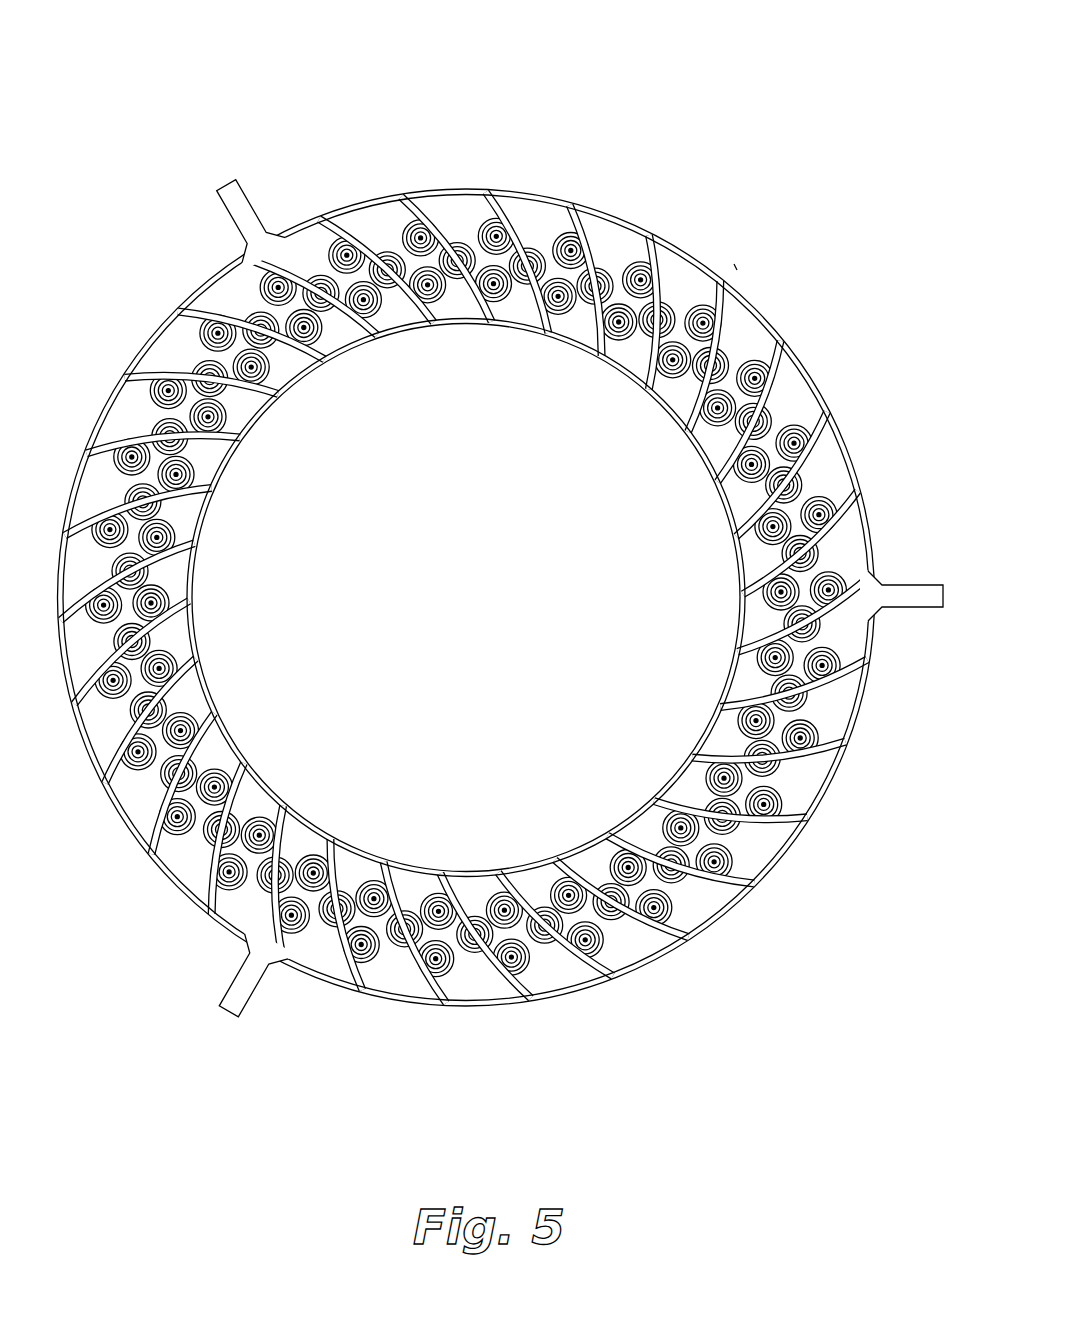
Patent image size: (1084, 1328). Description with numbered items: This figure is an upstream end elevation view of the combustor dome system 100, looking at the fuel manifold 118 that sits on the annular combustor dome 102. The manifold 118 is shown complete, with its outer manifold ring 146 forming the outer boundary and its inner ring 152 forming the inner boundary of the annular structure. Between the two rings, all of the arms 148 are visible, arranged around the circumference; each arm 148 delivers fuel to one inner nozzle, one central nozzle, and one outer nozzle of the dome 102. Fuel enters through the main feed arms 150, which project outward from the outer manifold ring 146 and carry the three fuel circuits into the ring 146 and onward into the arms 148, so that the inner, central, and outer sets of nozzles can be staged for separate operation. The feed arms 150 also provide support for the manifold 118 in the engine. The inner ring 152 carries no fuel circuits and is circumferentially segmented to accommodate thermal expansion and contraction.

The combustor dome system 100 is at (712, 125).
The combustor dome 102 is at (537, 222).
The fuel manifold 118 is at (803, 360).
The outer manifold ring 146 is at (738, 272).
The arms 148 is at (372, 248).
The main feed arms 150 is at (236, 192).
The inner ring 152 is at (651, 420).